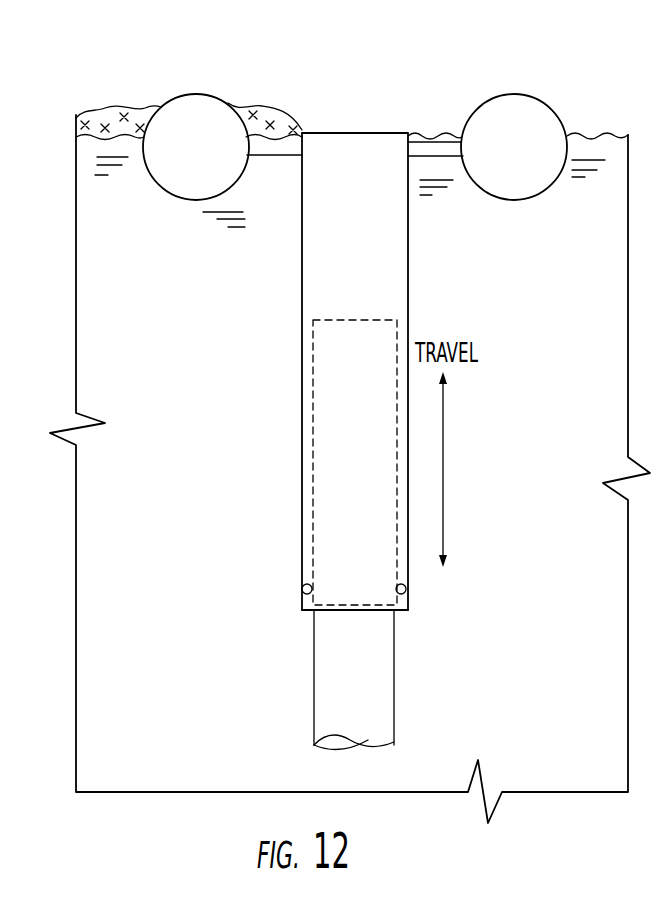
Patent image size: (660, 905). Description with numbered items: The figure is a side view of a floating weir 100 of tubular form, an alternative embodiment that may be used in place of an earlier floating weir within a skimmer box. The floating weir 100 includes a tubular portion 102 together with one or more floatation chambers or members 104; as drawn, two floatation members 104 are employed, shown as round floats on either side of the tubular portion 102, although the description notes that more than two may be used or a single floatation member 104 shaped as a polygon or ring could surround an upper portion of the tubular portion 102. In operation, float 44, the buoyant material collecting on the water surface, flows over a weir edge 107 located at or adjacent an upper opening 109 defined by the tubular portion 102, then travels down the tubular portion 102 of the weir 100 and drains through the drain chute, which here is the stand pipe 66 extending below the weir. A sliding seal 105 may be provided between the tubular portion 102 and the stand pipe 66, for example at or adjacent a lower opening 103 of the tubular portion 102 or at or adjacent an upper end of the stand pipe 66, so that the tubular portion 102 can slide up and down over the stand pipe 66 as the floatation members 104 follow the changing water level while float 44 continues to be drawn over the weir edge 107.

The float 44 is at (277, 98).
The stand pipe 66 is at (314, 688).
The floating weir 100 is at (249, 421).
The tubular portion 102 is at (302, 320).
The lower opening 103 is at (406, 621).
The floatation member 104 is at (497, 199).
The sliding seal 105 is at (293, 589).
The weir edge 107 is at (328, 128).
The upper opening 109 is at (380, 114).